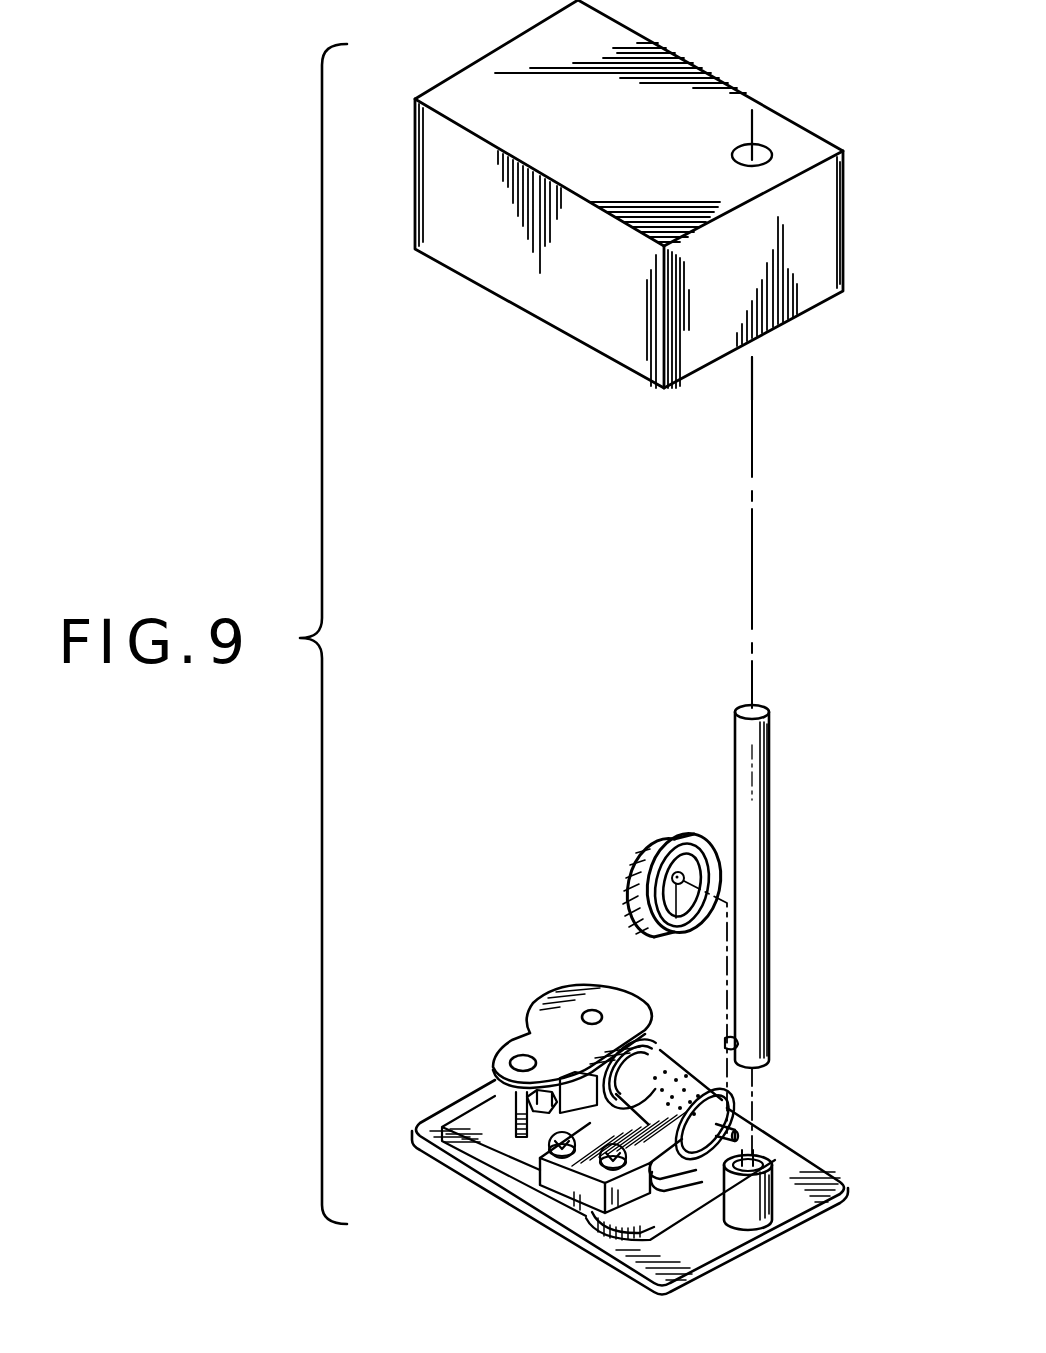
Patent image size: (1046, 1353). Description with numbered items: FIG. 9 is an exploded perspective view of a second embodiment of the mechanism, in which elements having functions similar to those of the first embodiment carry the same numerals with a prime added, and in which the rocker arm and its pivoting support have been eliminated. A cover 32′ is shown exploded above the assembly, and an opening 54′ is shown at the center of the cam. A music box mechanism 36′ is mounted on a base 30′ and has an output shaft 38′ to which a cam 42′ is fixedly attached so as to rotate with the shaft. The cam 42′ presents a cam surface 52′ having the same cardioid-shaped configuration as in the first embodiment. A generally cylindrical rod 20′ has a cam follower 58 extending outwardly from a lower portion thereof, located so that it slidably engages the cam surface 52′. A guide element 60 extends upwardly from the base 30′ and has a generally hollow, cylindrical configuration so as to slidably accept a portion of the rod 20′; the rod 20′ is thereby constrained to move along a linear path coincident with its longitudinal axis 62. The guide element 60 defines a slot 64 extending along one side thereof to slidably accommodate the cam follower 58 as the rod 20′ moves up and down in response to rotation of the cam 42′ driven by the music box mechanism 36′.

The housing cover 32′ is at (553, 303).
The longitudinal axis 62 is at (755, 602).
The rod 20′ is at (752, 807).
The cam 42′ is at (649, 858).
The cam surface 52′ is at (683, 858).
The hub 54′ is at (654, 933).
The music box mechanism 36′ is at (543, 1015).
The cam follower 58 is at (725, 1045).
The output shaft 38′ is at (736, 1137).
The slot 64 is at (755, 1160).
The guide element 60 is at (777, 1205).
The base 30′ is at (622, 1245).